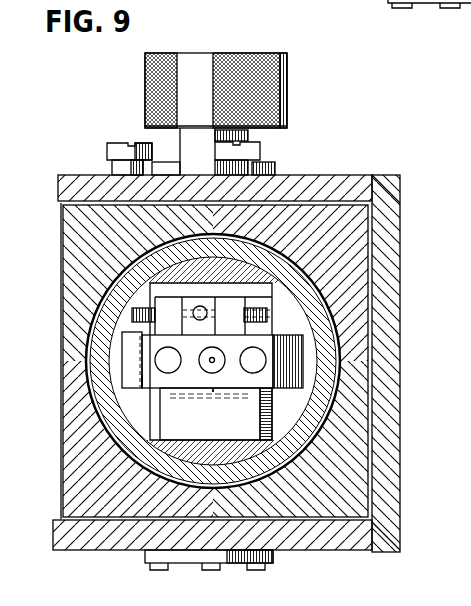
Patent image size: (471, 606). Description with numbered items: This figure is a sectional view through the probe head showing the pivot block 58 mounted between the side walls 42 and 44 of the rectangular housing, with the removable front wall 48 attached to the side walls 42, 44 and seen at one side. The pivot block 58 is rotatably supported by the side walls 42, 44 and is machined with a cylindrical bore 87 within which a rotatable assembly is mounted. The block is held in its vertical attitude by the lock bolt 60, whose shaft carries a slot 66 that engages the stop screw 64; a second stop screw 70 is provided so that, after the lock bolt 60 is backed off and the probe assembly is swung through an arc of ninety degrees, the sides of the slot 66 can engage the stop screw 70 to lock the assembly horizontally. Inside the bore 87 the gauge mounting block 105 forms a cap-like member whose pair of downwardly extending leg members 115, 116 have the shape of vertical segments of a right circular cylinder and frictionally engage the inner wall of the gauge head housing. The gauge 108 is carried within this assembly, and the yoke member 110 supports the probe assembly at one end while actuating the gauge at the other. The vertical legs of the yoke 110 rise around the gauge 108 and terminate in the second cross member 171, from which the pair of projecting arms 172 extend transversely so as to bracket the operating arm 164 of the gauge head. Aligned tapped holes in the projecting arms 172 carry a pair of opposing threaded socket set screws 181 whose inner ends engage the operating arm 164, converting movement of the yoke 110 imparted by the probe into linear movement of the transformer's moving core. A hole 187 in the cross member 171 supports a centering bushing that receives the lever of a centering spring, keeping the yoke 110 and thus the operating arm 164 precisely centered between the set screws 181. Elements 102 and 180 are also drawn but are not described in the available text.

The side wall 42 is at (336, 175).
The side wall 44 is at (309, 542).
The front wall 48 is at (396, 212).
The pivot block 58 is at (68, 500).
The lock bolt 60 is at (287, 97).
The stop screw 64 is at (262, 152).
The slot 66 is at (250, 135).
The second stop screw 70 is at (120, 148).
The cylindrical bore 87 is at (68, 420).
The carrier 102 is at (272, 297).
The gauge mounting block 105 is at (276, 436).
The gauge 108 is at (190, 423).
The yoke member 110 is at (130, 355).
The leg member 115 is at (240, 266).
The leg member 116 is at (240, 470).
The operating arm 164 is at (204, 302).
The second cross member 171 is at (215, 389).
The projecting arms 172 is at (268, 316).
The spring 180 is at (304, 364).
The threaded socket set screws 181 is at (282, 262).
The hole 187 is at (140, 380).